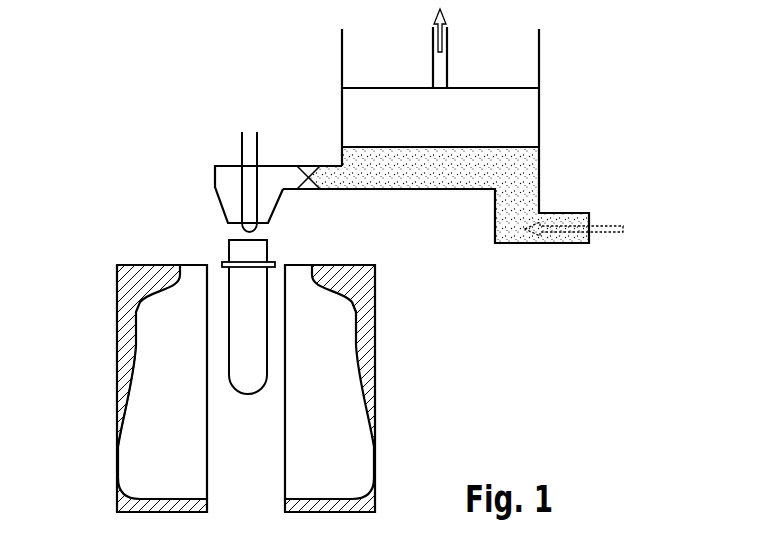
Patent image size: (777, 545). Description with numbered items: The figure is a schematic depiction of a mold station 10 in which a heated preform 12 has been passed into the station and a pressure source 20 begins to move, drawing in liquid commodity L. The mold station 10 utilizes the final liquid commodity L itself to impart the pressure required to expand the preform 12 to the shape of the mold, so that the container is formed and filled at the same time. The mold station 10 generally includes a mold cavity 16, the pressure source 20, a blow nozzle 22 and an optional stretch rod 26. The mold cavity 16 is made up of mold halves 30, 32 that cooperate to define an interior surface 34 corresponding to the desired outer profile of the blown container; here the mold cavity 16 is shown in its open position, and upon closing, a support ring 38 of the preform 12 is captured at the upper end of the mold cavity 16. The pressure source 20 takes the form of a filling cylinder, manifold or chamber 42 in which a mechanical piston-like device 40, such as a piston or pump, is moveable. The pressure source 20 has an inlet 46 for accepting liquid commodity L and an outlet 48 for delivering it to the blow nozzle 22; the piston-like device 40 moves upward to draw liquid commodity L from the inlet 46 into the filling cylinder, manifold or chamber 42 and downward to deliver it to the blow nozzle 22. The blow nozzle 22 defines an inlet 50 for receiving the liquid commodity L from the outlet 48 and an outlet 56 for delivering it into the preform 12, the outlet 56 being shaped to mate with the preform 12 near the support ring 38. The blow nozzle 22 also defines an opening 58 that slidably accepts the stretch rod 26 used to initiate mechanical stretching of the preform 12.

The mold station 10 is at (182, 70).
The preform 12 is at (265, 278).
The mold cavity 16 is at (355, 318).
The pressure source 20 is at (539, 60).
The blow nozzle 22 is at (213, 175).
The stretch rod 26 is at (242, 142).
The mold half 30 is at (117, 300).
The mold half 32 is at (377, 345).
The interior surface 34 is at (130, 375).
The support ring 38 is at (222, 264).
The piston-like device 40 is at (530, 115).
The filling cylinder, manifold or chamber 42 is at (355, 47).
The inlet 46 is at (573, 236).
The outlet 48 is at (312, 168).
The inlet 50 is at (303, 192).
The outlet 56 is at (232, 230).
The opening 58 is at (241, 163).
The liquid commodity L is at (520, 176).